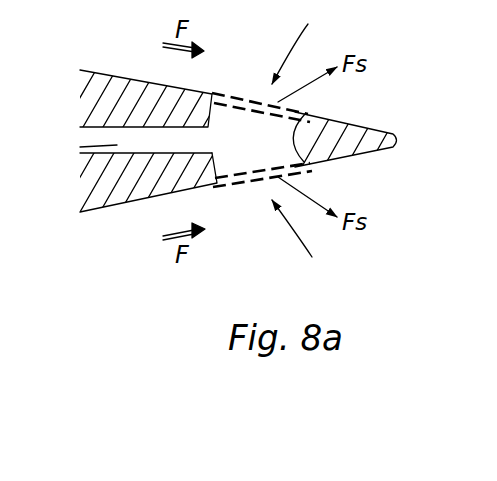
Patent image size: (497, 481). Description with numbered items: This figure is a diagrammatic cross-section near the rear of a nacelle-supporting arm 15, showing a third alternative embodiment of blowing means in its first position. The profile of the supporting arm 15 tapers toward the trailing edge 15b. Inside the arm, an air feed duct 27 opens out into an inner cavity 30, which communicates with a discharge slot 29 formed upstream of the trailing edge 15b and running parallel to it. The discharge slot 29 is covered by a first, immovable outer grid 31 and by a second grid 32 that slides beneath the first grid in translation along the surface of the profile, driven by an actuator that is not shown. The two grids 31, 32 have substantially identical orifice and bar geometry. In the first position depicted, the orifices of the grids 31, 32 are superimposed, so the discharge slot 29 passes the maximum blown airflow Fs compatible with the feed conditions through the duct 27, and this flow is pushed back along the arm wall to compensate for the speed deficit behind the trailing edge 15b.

The supporting arm 15 is at (106, 92).
The trailing edge 15b is at (393, 134).
The air feed duct 27 is at (78, 153).
The discharge slot 29 is at (307, 143).
The inner cavity 30 is at (223, 138).
The first immovable grid 31 is at (240, 97).
The second movable grid 32 is at (252, 117).